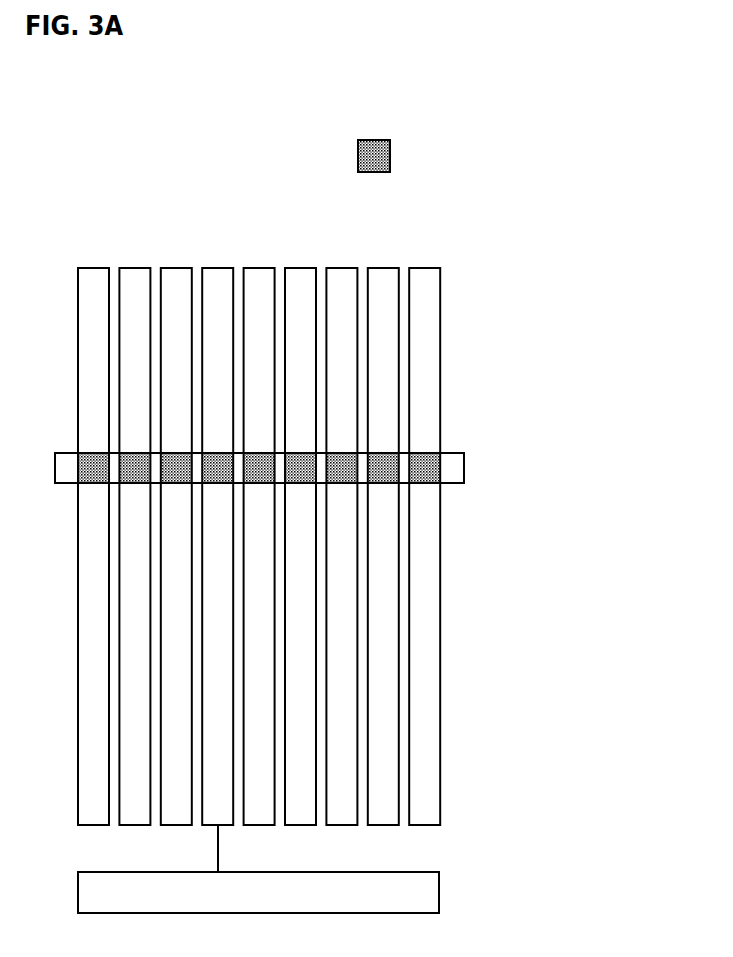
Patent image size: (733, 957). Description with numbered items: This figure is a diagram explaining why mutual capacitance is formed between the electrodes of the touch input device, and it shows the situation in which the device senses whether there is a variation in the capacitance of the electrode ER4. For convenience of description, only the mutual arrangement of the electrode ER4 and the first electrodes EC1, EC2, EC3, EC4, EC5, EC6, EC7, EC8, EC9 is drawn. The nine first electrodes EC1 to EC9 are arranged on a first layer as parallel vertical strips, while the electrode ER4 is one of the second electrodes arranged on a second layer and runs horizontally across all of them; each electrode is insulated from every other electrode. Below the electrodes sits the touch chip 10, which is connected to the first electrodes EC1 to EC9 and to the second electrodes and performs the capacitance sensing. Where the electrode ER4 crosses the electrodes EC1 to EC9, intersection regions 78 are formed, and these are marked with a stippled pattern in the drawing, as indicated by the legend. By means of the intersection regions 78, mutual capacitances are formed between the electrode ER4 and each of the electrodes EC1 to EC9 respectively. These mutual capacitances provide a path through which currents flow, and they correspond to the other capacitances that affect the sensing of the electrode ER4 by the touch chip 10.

The intersection regions 78 is at (373, 140).
The touch chip 10 is at (439, 892).
The first electrode EC1 is at (93, 268).
The first electrode EC2 is at (133, 268).
The first electrode EC3 is at (180, 268).
The first electrode EC4 is at (214, 268).
The first electrode EC5 is at (260, 268).
The first electrode EC6 is at (305, 268).
The first electrode EC7 is at (340, 268).
The first electrode EC8 is at (385, 268).
The first electrode EC9 is at (427, 268).
The second electrode ER4 is at (464, 468).